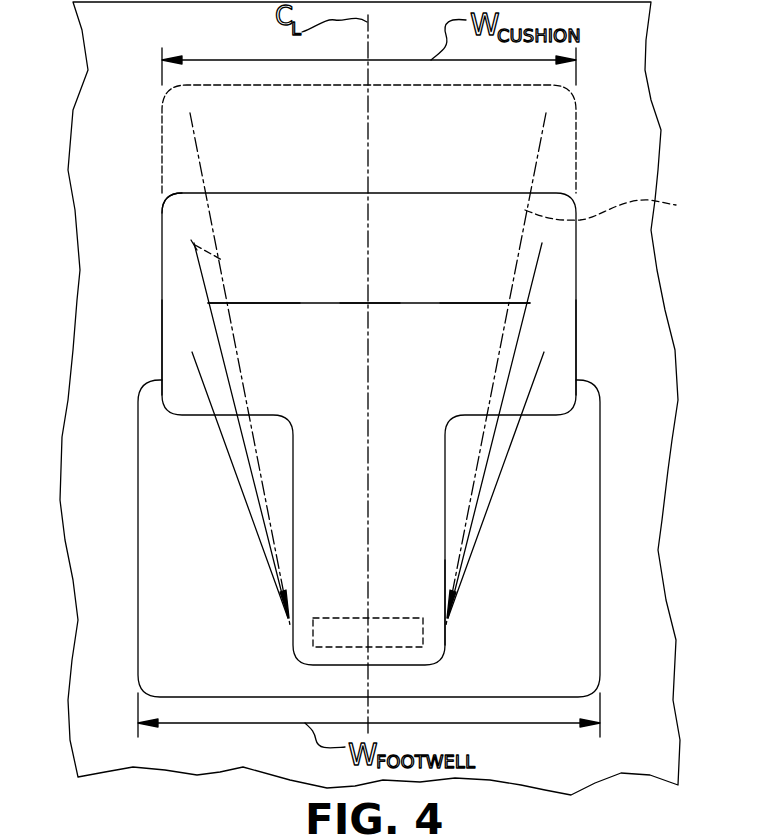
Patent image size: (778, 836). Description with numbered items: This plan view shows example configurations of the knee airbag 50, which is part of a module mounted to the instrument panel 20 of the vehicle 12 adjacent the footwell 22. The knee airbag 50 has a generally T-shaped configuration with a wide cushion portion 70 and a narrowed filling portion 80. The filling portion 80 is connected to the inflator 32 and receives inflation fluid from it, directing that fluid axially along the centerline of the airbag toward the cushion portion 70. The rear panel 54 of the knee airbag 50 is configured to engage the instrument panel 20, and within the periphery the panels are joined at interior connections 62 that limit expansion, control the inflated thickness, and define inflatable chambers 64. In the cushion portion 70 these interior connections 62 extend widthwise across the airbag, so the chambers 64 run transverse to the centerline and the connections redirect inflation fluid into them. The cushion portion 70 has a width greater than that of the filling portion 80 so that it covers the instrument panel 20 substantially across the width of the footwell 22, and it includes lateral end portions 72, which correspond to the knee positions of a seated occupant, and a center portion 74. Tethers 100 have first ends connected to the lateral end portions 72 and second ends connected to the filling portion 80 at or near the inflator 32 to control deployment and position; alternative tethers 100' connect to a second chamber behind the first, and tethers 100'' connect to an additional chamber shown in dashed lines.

The vehicle 12 is at (90, 193).
The instrument panel 20 is at (592, 252).
The footwell 22 is at (170, 579).
The inflator 32 is at (343, 637).
The knee airbag 50 is at (157, 193).
The rear panel 54 is at (268, 218).
The interior connections 62 is at (287, 305).
The inflatable chambers 64 is at (285, 84).
The cushion portion 70 is at (425, 572).
The lateral end portions 72 is at (188, 295).
The center portion 74 is at (398, 210).
The filling portion 80 is at (492, 212).
The tethers 100 is at (404, 485).
The tethers 100' is at (423, 430).
The tethers 100'' is at (417, 227).